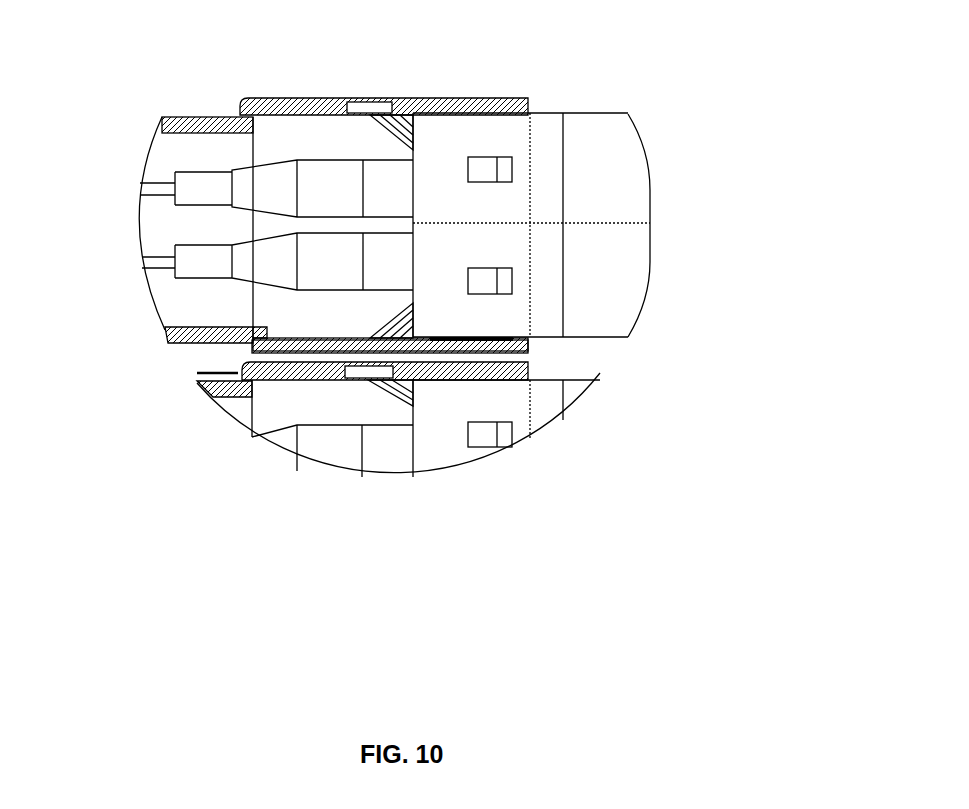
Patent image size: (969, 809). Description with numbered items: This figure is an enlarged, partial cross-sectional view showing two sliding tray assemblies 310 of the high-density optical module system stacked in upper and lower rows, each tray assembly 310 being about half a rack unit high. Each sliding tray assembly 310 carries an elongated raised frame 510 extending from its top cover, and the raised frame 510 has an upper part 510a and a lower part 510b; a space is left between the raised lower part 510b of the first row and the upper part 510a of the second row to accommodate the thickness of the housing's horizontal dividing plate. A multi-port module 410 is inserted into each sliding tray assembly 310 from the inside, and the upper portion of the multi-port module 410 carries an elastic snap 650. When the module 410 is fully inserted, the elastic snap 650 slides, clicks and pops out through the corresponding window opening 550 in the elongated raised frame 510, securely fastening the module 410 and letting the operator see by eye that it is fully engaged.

The sliding tray assembly 310 is at (677, 228).
The multi-port module 410 is at (648, 117).
The elongated raised frame 510 is at (485, 88).
The upper part 510a is at (228, 95).
The lower part 510b is at (238, 352).
The window opening 550 is at (375, 90).
The elastic snap 650 is at (377, 133).